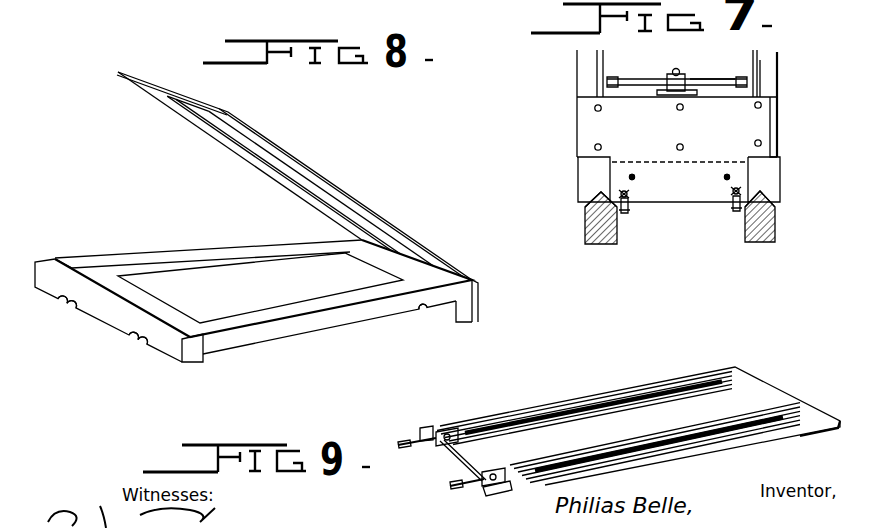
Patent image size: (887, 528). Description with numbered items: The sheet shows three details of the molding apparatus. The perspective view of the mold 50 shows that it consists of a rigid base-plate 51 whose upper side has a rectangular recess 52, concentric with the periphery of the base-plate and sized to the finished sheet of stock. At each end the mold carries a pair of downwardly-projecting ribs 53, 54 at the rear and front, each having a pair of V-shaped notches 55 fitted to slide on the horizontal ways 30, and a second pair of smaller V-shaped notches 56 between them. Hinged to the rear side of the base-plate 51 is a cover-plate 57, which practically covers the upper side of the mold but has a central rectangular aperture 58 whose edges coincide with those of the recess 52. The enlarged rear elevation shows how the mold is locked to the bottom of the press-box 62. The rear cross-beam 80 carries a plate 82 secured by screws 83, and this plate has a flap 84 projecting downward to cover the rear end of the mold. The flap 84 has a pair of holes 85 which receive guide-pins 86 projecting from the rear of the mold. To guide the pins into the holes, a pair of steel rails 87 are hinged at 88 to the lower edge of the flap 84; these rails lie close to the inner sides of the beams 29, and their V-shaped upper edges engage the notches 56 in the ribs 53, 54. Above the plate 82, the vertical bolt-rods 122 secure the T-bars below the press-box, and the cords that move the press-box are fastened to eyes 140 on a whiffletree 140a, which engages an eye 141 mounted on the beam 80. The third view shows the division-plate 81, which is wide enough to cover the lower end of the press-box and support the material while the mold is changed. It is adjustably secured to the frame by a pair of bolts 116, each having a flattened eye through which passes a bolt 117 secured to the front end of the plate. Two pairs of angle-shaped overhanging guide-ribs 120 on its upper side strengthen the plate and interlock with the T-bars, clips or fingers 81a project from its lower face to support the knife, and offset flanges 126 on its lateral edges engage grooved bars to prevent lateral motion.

In FIG. 7, the beams 29 is at (600, 246).
In FIG. 7, the horizontal ways 30 is at (594, 200).
In FIG. 8, the mold 50 is at (152, 260).
In FIG. 8, the base-plate 51 is at (327, 318).
In FIG. 7, the base-plate 51 is at (782, 168).
In FIG. 8, the rectangular recess 52 is at (260, 288).
In FIG. 8, the downwardly-projecting rib 53 is at (474, 312).
In FIG. 7, the downwardly-projecting rib 53 is at (588, 178).
In FIG. 8, the downwardly-projecting rib 54 is at (192, 355).
In FIG. 8, the V-shaped notches 55 is at (65, 299).
In FIG. 8, the smaller V-shaped notches 56 is at (78, 307).
In FIG. 8, the cover-plate 57 is at (318, 175).
In FIG. 8, the central rectangular aperture 58 is at (258, 152).
In FIG. 7, the press-box 62 is at (762, 75).
In FIG. 7, the rear cross-beam 80 is at (778, 122).
In FIG. 9, the division-plate 81 is at (767, 395).
In FIG. 9, the clips or fingers 81a is at (823, 437).
In FIG. 7, the plate 82 is at (650, 92).
In FIG. 7, the screws 83 is at (596, 145).
In FIG. 7, the flap 84 is at (680, 182).
In FIG. 7, the holes 85 is at (633, 175).
In FIG. 7, the guide-pins 86 is at (752, 180).
In FIG. 7, the rails 87 is at (632, 216).
In FIG. 7, the hinge 88 is at (631, 205).
In FIG. 9, the bolts 116 is at (412, 448).
In FIG. 9, the bolt 117 is at (442, 420).
In FIG. 9, the angle-shaped overhanging guide-ribs 120 is at (613, 405).
In FIG. 7, the vertical bolt-rods 122 is at (597, 78).
In FIG. 9, the offset flanges 126 is at (495, 412).
In FIG. 7, the eyes 140 is at (667, 94).
In FIG. 7, the whiffletree 140a is at (710, 83).
In FIG. 7, the eye 141 is at (690, 64).